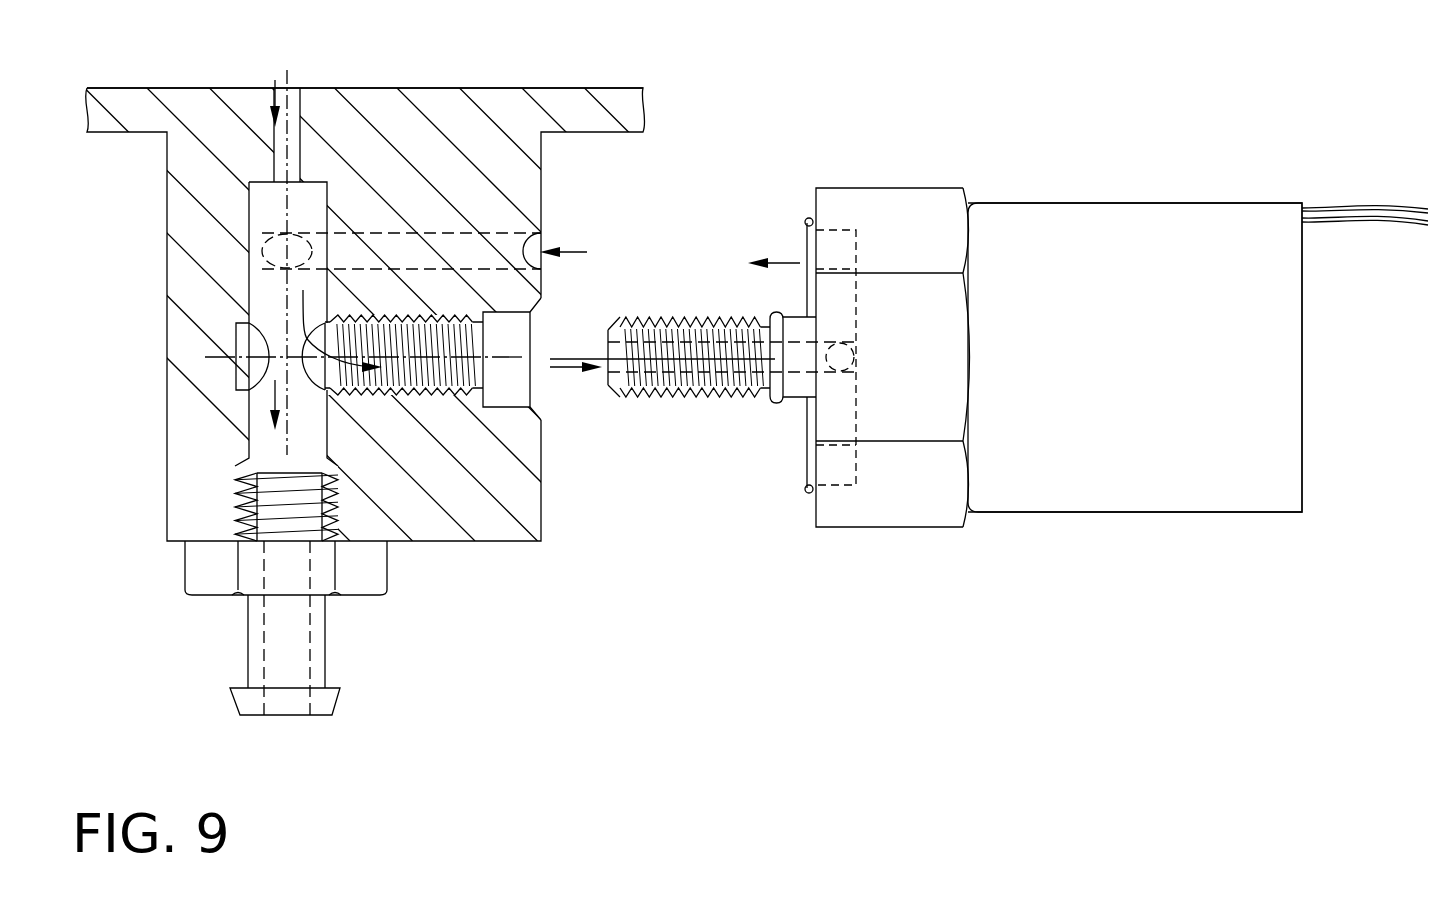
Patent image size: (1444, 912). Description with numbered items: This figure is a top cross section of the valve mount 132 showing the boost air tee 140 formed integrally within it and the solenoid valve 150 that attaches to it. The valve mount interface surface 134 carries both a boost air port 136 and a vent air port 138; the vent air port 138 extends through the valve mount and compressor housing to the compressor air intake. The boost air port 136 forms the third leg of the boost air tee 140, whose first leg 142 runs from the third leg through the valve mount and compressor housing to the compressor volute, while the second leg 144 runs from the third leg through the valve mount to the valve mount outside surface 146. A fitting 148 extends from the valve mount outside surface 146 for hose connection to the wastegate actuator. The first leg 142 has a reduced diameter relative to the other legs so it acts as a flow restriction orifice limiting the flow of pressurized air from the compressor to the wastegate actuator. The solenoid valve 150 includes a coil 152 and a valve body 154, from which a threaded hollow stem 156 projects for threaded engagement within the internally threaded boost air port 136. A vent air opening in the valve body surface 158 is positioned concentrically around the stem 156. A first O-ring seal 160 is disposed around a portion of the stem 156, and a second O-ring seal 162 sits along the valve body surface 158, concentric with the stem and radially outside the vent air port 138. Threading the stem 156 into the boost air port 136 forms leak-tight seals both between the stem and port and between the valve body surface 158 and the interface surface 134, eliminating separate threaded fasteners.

The valve mount 132 is at (442, 86).
The valve mount interface surface 134 is at (548, 488).
The boost air port 136 is at (505, 325).
The vent air port 138 is at (542, 243).
The boost air tee 140 is at (228, 330).
The first leg 142 is at (298, 100).
The second leg 144 is at (263, 450).
The valve mount outside surface 146 is at (440, 548).
The fitting 148 is at (288, 712).
The solenoid valve 150 is at (1098, 195).
The coil 152 is at (1085, 512).
The valve body 154 is at (892, 512).
The threaded hollow stem 156 is at (640, 397).
The valve body surface 158 is at (815, 460).
The first O-ring seal 160 is at (775, 402).
The second O-ring seal 162 is at (807, 492).